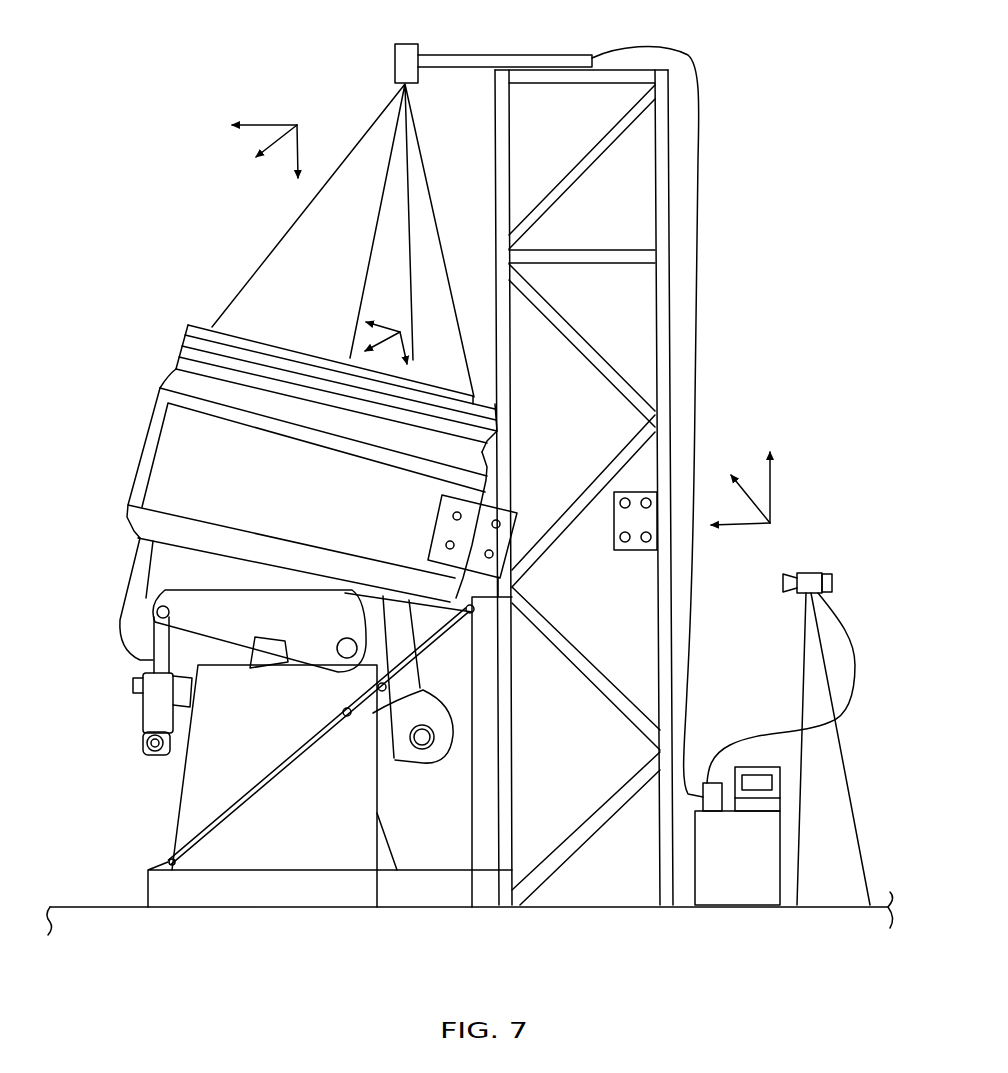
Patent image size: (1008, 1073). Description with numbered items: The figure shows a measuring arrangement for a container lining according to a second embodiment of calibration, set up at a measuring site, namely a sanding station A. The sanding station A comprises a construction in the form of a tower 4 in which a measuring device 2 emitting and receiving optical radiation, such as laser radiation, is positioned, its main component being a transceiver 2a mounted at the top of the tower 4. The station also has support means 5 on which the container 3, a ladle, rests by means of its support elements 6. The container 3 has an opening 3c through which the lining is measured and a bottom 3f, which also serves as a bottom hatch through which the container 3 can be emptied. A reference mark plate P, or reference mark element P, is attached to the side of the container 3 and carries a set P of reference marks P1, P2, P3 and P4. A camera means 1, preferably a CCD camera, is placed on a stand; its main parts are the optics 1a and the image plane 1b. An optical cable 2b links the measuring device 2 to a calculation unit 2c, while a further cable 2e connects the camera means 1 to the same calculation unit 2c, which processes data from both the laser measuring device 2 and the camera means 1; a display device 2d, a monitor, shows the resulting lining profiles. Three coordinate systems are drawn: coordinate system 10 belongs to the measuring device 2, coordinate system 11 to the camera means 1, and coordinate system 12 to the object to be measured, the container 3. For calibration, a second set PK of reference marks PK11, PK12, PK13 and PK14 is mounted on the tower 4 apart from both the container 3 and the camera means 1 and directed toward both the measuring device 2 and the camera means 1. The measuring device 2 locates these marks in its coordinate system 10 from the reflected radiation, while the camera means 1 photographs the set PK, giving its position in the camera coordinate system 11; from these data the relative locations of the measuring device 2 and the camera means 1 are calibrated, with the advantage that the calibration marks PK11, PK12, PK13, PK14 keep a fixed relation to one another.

The sanding station A is at (124, 108).
The camera means 1 is at (806, 536).
The optics 1a is at (790, 588).
The image plane 1b is at (810, 577).
The measuring device 2 is at (343, 60).
The transceiver 2a is at (393, 70).
The optical cable 2b is at (700, 143).
The calculation unit 2c is at (712, 805).
The display device 2d is at (757, 783).
The cable 2e is at (852, 694).
The container 3 is at (152, 304).
The opening 3c is at (316, 333).
The bottom hatch 3f is at (182, 650).
The tower 4 is at (503, 158).
The support means 5 is at (195, 785).
The support elements 6 is at (281, 645).
The coordinate system of the measuring device 10 is at (242, 142).
The coordinate system of the camera 11 is at (740, 464).
The coordinate system of the object to be measured 12 is at (382, 322).
The reference mark element P is at (440, 532).
The reference mark P1 is at (454, 514).
The reference mark P2 is at (500, 522).
The reference mark P3 is at (446, 546).
The reference mark P4 is at (489, 559).
The second set of reference marks PK is at (629, 572).
The calibration reference mark PK11 is at (621, 499).
The calibration reference mark PK12 is at (643, 499).
The calibration reference mark PK13 is at (620, 537).
The calibration reference mark PK14 is at (650, 553).